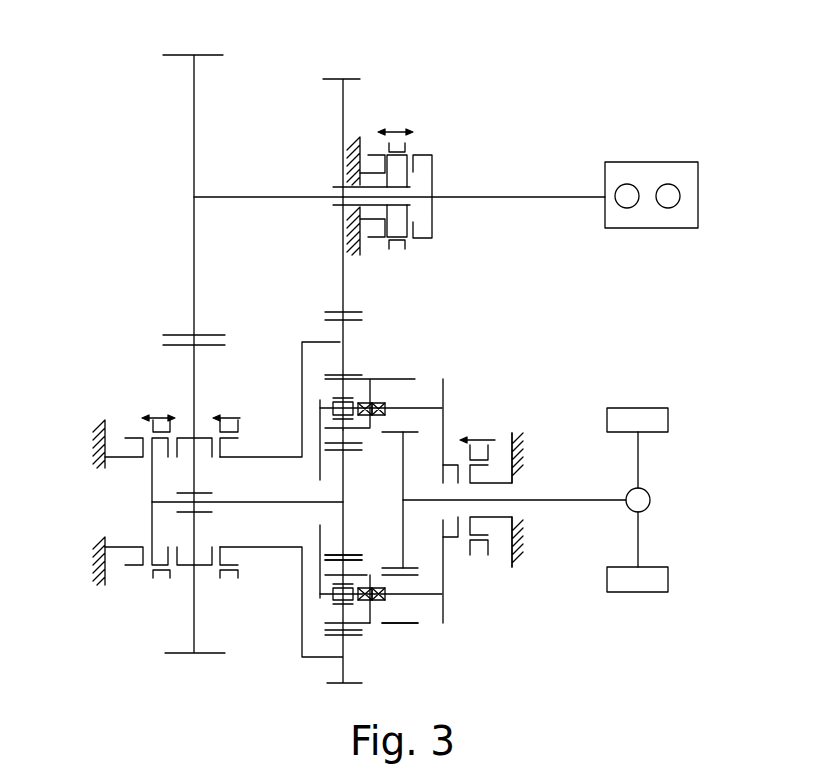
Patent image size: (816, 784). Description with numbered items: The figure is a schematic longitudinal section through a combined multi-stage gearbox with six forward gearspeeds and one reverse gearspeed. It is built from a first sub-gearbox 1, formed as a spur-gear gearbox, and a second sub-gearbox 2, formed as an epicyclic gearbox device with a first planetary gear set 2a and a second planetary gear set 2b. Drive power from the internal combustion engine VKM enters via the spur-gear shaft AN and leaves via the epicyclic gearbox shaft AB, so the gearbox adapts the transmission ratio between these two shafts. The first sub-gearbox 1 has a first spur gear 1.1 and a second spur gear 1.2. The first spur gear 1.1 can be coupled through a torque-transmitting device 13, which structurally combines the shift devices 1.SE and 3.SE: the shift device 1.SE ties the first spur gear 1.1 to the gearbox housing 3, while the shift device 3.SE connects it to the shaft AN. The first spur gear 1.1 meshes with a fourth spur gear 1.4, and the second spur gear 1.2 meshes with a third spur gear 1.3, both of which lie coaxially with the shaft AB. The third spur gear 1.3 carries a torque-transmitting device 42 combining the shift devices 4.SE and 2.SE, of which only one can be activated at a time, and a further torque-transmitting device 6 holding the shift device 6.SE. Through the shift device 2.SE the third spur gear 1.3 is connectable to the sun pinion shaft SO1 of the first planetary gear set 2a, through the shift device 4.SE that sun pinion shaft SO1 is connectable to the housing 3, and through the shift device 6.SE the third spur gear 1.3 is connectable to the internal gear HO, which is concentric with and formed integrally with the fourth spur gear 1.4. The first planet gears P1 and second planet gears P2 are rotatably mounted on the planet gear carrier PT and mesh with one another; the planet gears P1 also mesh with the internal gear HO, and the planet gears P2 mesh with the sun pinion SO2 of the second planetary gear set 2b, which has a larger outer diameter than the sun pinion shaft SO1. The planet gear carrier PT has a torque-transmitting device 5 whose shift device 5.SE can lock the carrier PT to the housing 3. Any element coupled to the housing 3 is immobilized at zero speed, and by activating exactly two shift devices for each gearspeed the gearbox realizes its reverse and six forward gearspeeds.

The first sub-gearbox 1 is at (138, 98).
The first spur gear 1.1 is at (345, 102).
The second spur gear 1.2 is at (195, 93).
The third spur gear 1.3 is at (188, 375).
The fourth spur gear 1.4 is at (358, 327).
The torque-transmitting device 13 is at (412, 147).
The torque-transmitting device 42 is at (140, 392).
The torque-transmitting device 6 is at (240, 383).
The gearbox housing 3 is at (347, 227).
The torque-transmitting device 5 is at (510, 422).
The second sub-gearbox 2 is at (530, 645).
The first planetary gear set 2a is at (335, 692).
The second planetary gear set 2b is at (420, 636).
The internal gear HO is at (347, 355).
The first planet gears P1 is at (362, 370).
The second planet gears P2 is at (417, 379).
The planet gear carrier PT is at (318, 462).
The sun pinion shaft SO1 is at (345, 512).
The sun pinion SO2 is at (403, 450).
The spur-gear shaft AN is at (571, 190).
The epicyclic gearbox shaft AB is at (565, 497).
The internal combustion engine VKM is at (650, 162).
The first shift device 1.SE is at (380, 178).
The shift device 3.SE is at (426, 119).
The shift device 2.SE is at (165, 401).
The shift device 4.SE is at (129, 483).
The shift device 6.SE is at (235, 483).
The shift device 5.SE is at (481, 484).